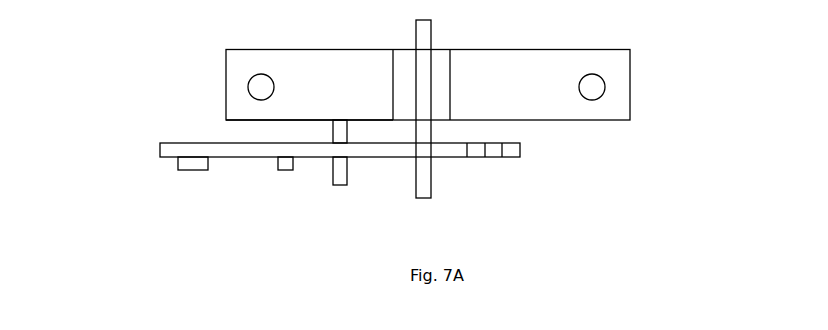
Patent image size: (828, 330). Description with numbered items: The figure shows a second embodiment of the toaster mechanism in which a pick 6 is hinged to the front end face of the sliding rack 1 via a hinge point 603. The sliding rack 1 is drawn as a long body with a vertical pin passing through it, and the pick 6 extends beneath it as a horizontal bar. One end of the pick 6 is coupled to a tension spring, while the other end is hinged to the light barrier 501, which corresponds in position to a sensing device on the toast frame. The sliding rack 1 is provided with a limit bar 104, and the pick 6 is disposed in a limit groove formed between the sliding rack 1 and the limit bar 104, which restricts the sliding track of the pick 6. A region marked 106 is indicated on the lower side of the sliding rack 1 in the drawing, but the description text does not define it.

The sliding rack 1 is at (545, 105).
The lower mounting surface 106 is at (237, 133).
The pick 6 is at (160, 152).
The light barrier 501 is at (200, 167).
The limit bar 104 is at (283, 168).
The hinge point 603 is at (338, 180).